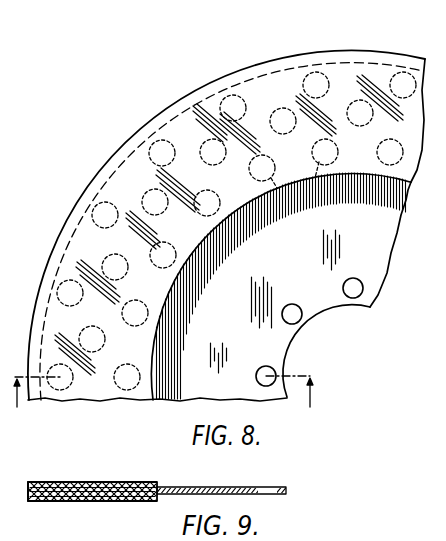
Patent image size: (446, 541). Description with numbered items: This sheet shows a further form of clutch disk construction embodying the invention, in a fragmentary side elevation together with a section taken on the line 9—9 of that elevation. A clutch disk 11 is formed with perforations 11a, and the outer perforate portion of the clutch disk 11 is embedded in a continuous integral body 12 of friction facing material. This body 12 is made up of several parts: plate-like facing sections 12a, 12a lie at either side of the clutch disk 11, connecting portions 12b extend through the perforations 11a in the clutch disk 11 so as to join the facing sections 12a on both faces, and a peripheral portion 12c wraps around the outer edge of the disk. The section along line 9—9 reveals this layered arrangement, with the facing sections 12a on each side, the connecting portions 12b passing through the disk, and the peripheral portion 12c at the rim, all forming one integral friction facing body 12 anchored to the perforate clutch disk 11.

In FIG. 8, the clutch disk 11 is at (375, 252).
In FIG. 9, the clutch disk 11 is at (286, 491).
In FIG. 8, the perforations 11a is at (302, 192).
In FIG. 8, the continuous integral body of friction facing material 12 is at (277, 58).
In FIG. 9, the continuous integral body of friction facing material 12 is at (143, 502).
In FIG. 8, the plate-like facing sections 12a is at (208, 100).
In FIG. 9, the plate-like facing sections 12a is at (97, 482).
In FIG. 8, the connecting portions 12b is at (220, 281).
In FIG. 9, the connecting portions 12b is at (62, 482).
In FIG. 8, the peripheral portion 12c is at (113, 160).
In FIG. 9, the peripheral portion 12c is at (25, 493).
In FIG. 8, the section line 9— 9 is at (163, 400).